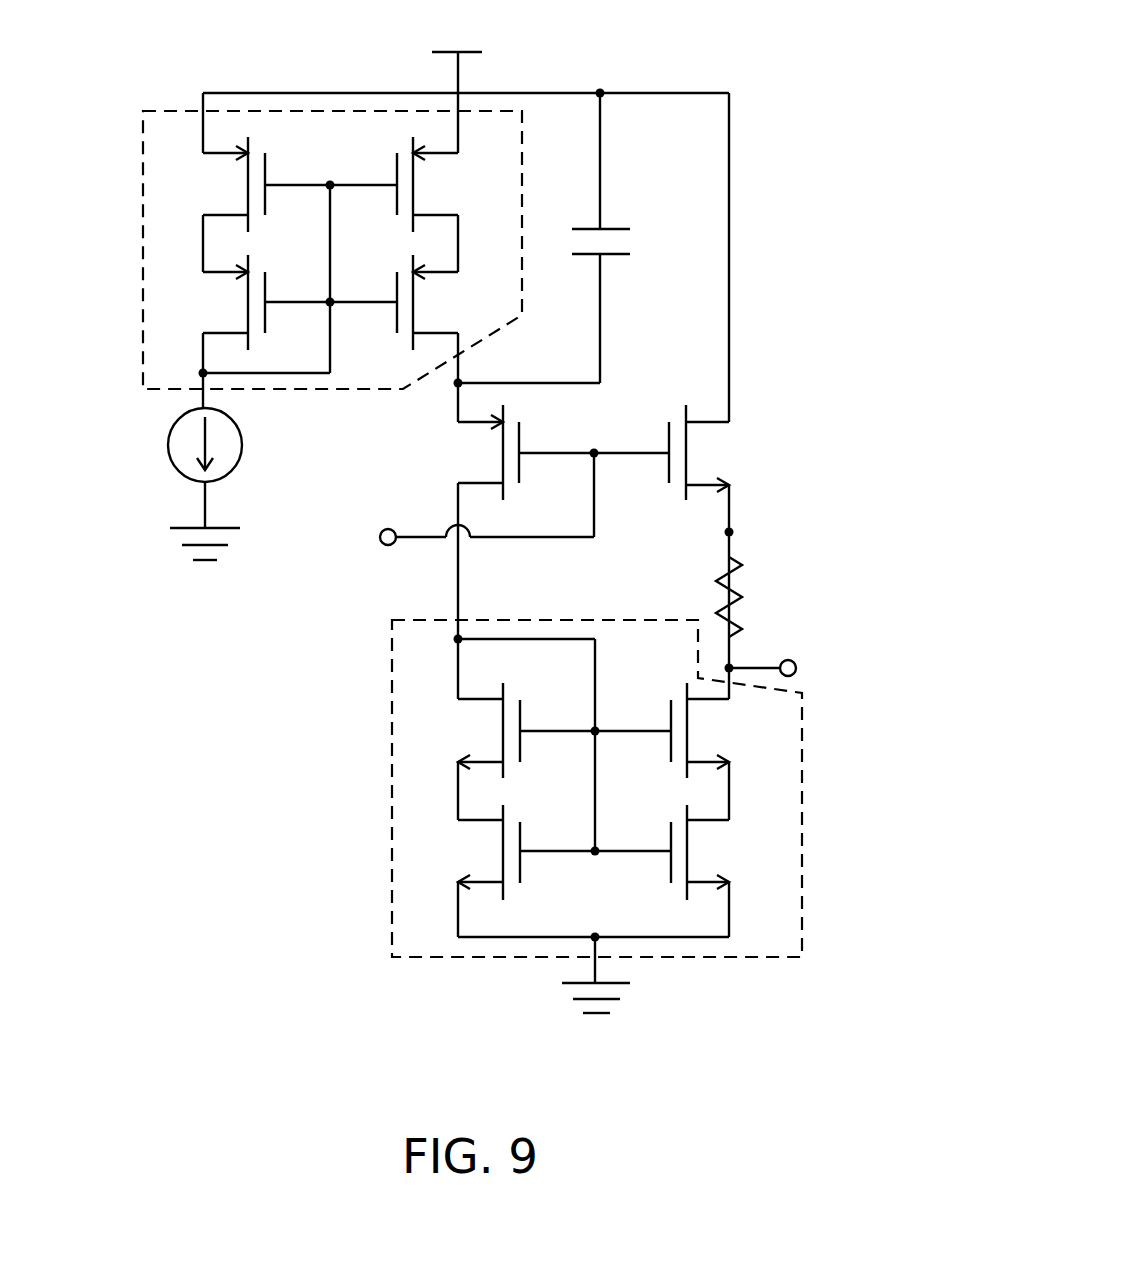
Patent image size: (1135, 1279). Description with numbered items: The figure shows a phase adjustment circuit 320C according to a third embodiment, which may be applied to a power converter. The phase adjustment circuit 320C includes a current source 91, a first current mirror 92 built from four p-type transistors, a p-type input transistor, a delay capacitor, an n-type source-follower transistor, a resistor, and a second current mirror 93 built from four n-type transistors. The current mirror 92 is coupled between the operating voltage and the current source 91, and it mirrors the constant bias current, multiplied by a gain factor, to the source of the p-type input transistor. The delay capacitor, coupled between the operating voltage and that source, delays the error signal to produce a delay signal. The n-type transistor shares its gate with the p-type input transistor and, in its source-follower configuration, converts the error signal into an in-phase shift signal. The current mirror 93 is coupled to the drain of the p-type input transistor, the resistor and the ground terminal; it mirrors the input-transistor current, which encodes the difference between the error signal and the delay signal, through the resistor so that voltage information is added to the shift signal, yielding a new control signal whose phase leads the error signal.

The current source 91 is at (167, 445).
The current mirror 92 is at (172, 110).
The current mirror 93 is at (392, 757).
The phase adjustment circuit 320C is at (850, 1063).